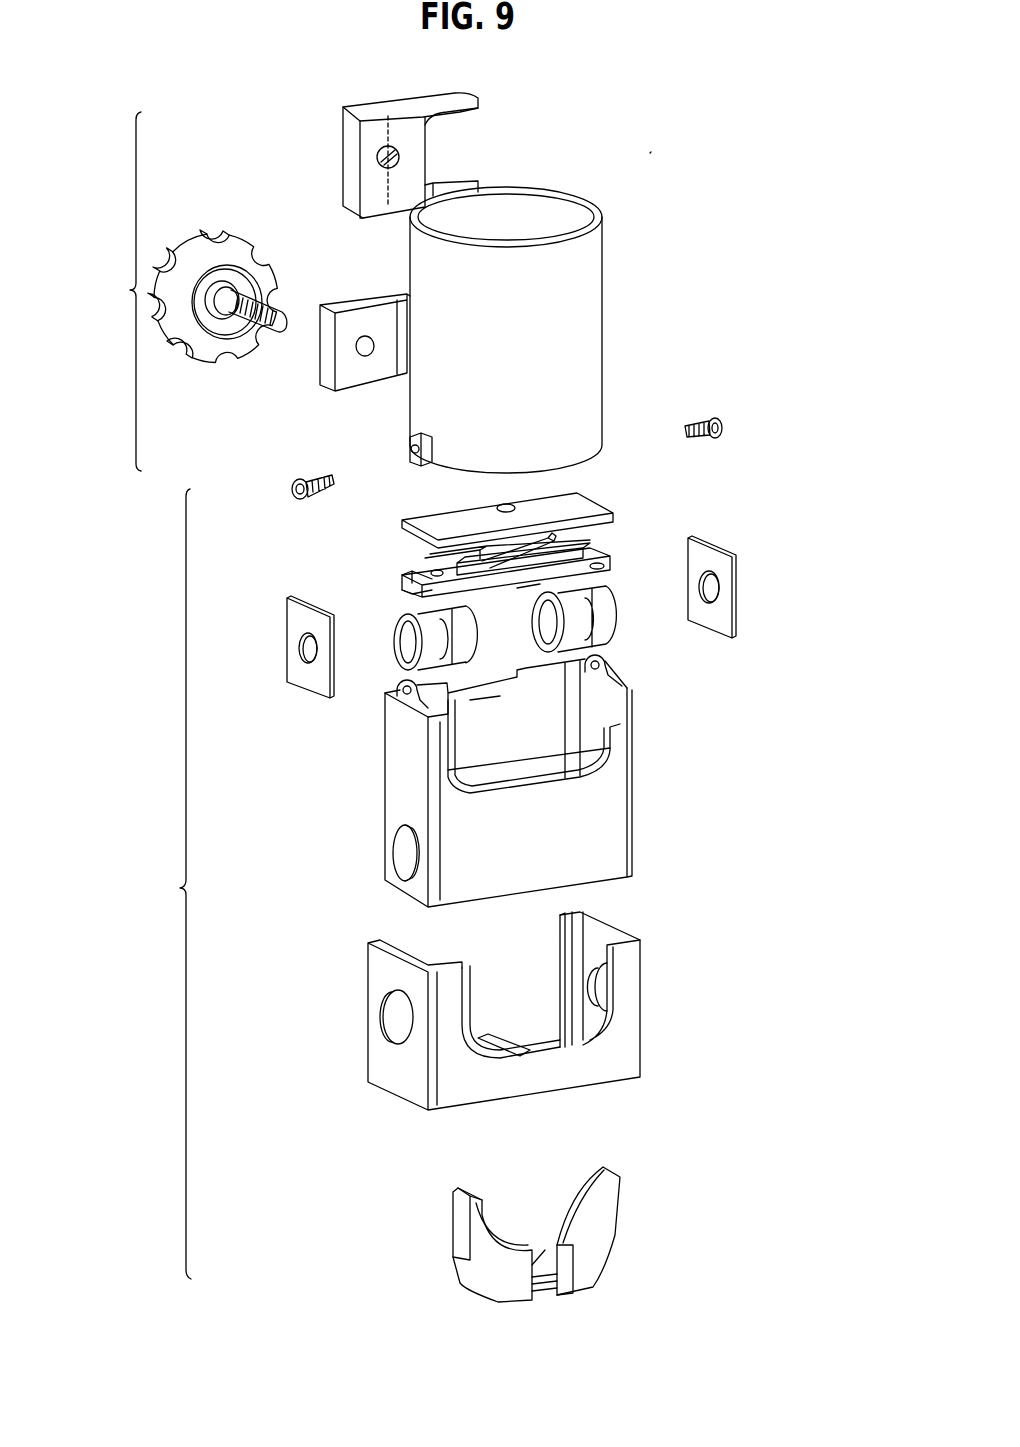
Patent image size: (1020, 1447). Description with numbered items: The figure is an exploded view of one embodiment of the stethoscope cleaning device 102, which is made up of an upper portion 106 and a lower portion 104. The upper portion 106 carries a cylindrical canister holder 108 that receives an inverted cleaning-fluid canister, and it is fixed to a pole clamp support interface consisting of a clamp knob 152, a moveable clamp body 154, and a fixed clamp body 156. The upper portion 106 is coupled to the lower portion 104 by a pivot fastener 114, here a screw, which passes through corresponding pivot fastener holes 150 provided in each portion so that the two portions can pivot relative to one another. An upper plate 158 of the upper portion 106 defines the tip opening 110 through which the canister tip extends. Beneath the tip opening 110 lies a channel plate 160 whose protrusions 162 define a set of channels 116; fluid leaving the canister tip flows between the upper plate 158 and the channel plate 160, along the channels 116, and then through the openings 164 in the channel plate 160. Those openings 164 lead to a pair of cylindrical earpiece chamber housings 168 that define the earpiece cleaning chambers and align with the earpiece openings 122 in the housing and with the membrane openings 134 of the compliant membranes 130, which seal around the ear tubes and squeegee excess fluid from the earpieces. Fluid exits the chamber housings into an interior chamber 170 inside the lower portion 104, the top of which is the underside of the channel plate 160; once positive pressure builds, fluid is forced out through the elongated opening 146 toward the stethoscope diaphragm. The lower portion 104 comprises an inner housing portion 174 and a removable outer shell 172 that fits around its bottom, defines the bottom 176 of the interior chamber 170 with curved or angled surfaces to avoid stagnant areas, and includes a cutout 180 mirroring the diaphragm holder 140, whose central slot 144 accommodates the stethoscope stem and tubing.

The stethoscope cleaning device 102 is at (660, 149).
The lower portion 104 is at (180, 888).
The upper portion 106 is at (130, 290).
The canister holder 108 is at (598, 258).
The tip opening 110 is at (500, 506).
The pivot fastener 114 is at (300, 479).
The channels 116 is at (478, 559).
The earpiece openings 122 is at (392, 851).
The compliant membrane 130 is at (735, 566).
The membrane openings 134 is at (722, 600).
The diaphragm holder 140 is at (592, 1250).
The central slot 144 is at (541, 1292).
The elongated opening 146 is at (517, 592).
The pivot fastener holes 150 is at (405, 456).
The clamp knob 152 is at (204, 236).
The moveable clamp body 154 is at (420, 96).
The fixed clamp body 156 is at (346, 296).
The upper plate 158 is at (612, 514).
The channel plate 160 is at (400, 586).
The protrusions 162 is at (592, 547).
The openings 164 is at (412, 598).
The earpiece chamber housings 168 is at (622, 626).
The interior chamber 170 is at (490, 706).
The outer shell 172 is at (640, 978).
The inner housing portion 174 is at (630, 845).
The bottom 176 is at (522, 1040).
The cutout 180 is at (610, 1012).